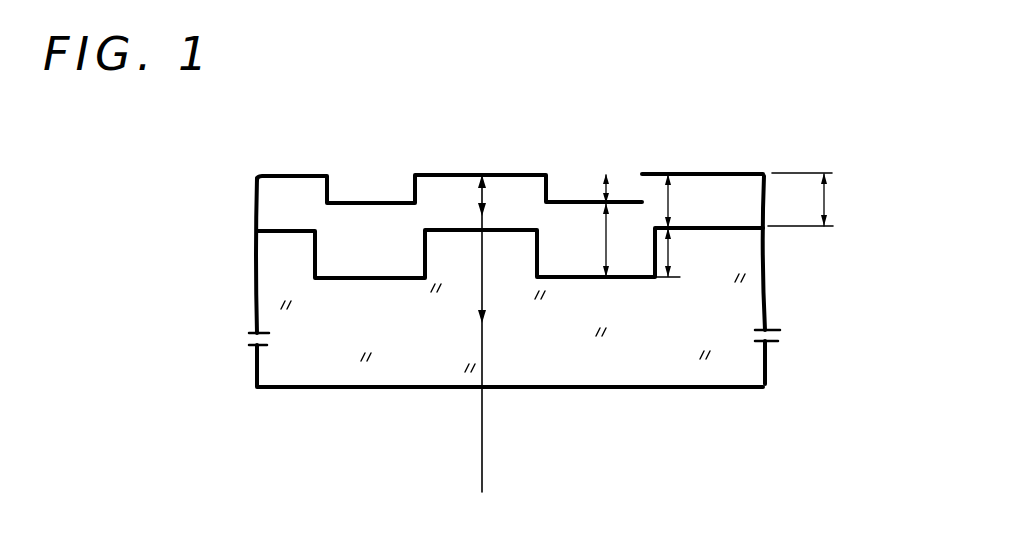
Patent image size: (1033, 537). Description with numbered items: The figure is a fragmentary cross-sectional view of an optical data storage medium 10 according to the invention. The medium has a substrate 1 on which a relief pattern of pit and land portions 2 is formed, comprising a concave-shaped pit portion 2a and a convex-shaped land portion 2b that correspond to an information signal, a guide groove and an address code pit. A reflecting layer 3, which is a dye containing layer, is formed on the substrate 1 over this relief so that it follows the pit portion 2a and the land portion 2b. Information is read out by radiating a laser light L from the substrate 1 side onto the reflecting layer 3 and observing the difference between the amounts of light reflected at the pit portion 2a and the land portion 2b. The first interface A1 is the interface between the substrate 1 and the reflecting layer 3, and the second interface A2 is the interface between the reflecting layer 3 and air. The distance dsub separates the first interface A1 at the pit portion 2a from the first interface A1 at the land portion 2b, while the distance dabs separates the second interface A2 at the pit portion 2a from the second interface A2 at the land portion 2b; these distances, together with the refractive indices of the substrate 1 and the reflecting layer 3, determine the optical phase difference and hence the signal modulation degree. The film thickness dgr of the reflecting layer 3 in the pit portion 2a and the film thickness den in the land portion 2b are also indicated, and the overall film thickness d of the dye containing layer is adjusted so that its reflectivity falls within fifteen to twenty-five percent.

The substrate 1 is at (723, 368).
The pit and land portions 2 is at (503, 58).
The pit portion 2a is at (372, 278).
The land portion 2b is at (443, 229).
The reflecting layer 3 is at (703, 175).
The optical data storage medium 10 is at (594, 120).
The first interface A1 is at (270, 231).
The second interface A2 is at (272, 176).
The laser light L is at (480, 462).
The film thickness d is at (826, 203).
The distance between second interfaces dabs is at (603, 190).
The film thickness of the light reflecting layer in the pit portion dgr is at (580, 240).
The film thickness of the light reflecting layer in the land portion den is at (687, 201).
The distance between first interfaces dsub is at (688, 252).